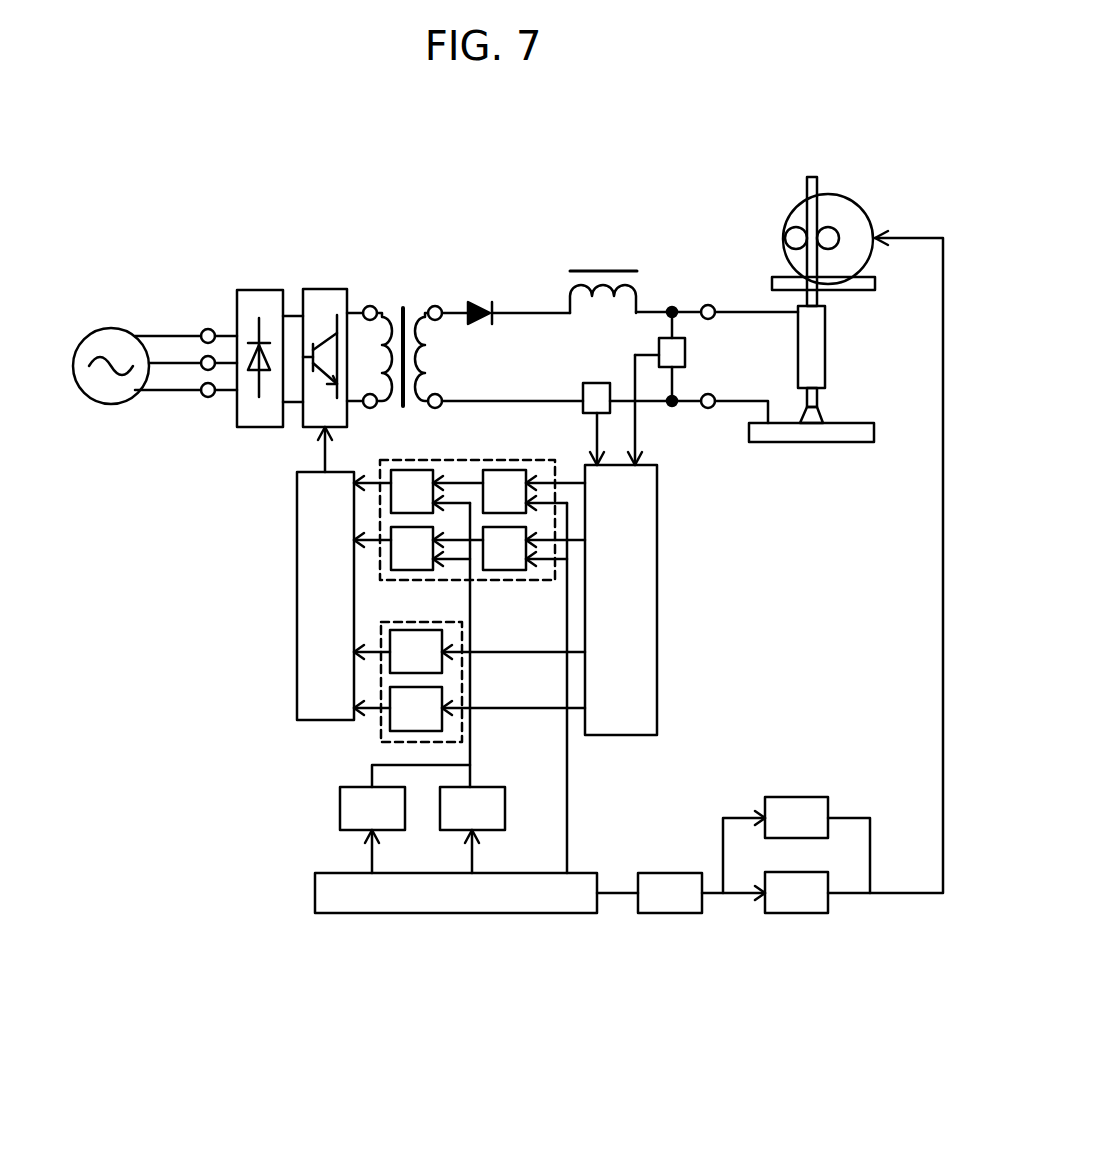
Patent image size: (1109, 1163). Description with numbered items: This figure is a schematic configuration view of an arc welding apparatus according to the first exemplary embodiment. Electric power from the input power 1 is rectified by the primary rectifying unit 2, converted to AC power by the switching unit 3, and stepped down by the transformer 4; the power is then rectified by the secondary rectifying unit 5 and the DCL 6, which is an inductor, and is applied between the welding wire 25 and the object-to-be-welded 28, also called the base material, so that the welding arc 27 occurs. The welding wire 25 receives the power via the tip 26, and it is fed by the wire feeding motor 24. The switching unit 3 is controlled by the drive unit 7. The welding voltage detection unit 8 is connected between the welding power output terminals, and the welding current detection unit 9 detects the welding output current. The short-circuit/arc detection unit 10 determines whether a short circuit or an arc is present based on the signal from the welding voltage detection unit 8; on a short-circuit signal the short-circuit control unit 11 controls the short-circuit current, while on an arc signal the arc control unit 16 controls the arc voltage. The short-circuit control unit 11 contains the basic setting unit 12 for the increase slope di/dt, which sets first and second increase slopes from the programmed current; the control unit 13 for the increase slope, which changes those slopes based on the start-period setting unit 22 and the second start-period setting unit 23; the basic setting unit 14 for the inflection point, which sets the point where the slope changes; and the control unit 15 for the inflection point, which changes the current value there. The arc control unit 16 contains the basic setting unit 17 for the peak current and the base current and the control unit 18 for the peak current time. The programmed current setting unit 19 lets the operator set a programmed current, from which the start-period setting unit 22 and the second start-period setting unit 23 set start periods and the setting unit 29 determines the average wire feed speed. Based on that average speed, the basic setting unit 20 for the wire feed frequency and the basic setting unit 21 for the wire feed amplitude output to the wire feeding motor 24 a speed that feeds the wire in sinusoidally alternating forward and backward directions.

The input power 1 is at (113, 327).
The primary rectifying unit 2 is at (260, 288).
The switching unit 3 is at (323, 288).
The transformer 4 is at (422, 303).
The secondary rectifying unit 5 is at (483, 300).
The DCL 6 is at (603, 270).
The drive unit 7 is at (295, 590).
The welding voltage detection unit 8 is at (687, 355).
The welding current detection unit 9 is at (598, 382).
The short-circuit/arc detection unit 10 is at (657, 593).
The short-circuit control unit 11 is at (535, 460).
The basic setting unit for the increase slope di/dt of the short-circuit current 12 is at (492, 467).
The control unit for the increase slope di/dt of the short-circuit current 13 is at (408, 467).
The basic setting unit for the inflection point of the short-circuit current 14 is at (520, 572).
The control unit for the inflection point of the short-circuit current 15 is at (403, 572).
The arc control unit 16 is at (405, 622).
The basic setting unit for the peak current and the base current 17 is at (443, 640).
The control unit for the peak current time 18 is at (443, 697).
The programmed current setting unit 19 is at (358, 917).
The basic setting unit for the wire feed frequency 20 is at (795, 797).
The basic setting unit for the wire feed amplitude 21 is at (795, 915).
The start-period setting unit 22 is at (505, 808).
The second start-period setting unit 23 is at (340, 808).
The wire feeding motor 24 is at (843, 208).
The welding wire 25 is at (807, 187).
The tip 26 is at (827, 343).
The welding arc 27 is at (815, 417).
The object-to-be-welded 28 is at (843, 442).
The setting unit for the average wire feed speed 29 is at (666, 915).